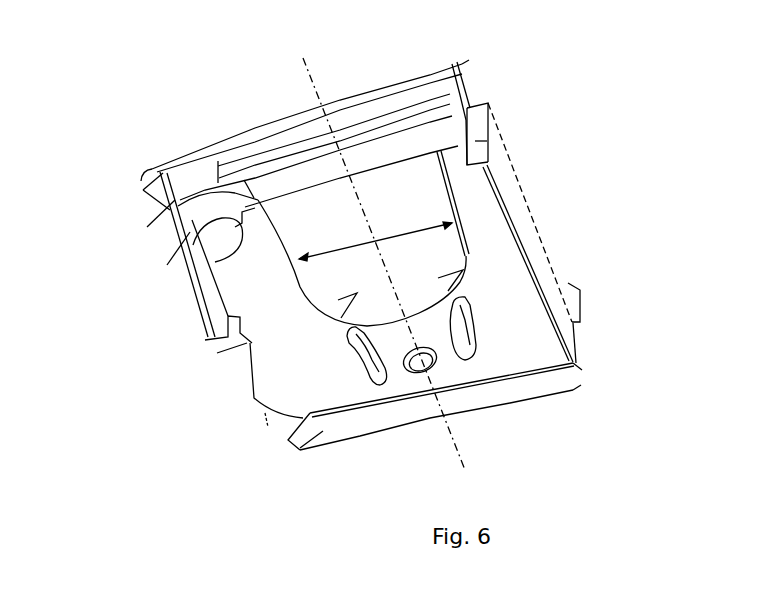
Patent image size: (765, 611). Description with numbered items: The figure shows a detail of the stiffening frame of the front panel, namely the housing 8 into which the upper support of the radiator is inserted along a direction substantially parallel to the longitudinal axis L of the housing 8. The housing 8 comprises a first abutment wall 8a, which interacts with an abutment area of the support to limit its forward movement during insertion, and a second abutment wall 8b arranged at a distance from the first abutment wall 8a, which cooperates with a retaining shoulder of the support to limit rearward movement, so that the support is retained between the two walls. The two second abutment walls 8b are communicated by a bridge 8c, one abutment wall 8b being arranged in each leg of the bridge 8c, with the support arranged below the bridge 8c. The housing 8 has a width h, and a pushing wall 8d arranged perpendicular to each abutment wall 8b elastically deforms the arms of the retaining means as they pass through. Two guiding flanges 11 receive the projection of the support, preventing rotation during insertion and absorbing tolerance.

The housing 8 is at (313, 213).
The first abutment wall 8a is at (338, 300).
The second abutment wall 8b is at (240, 258).
The bridge 8c is at (396, 146).
The pushing wall 8d is at (150, 172).
The guiding flanges 11 is at (370, 380).
The longitudinal axis L is at (374, 249).
The width h is at (375, 235).